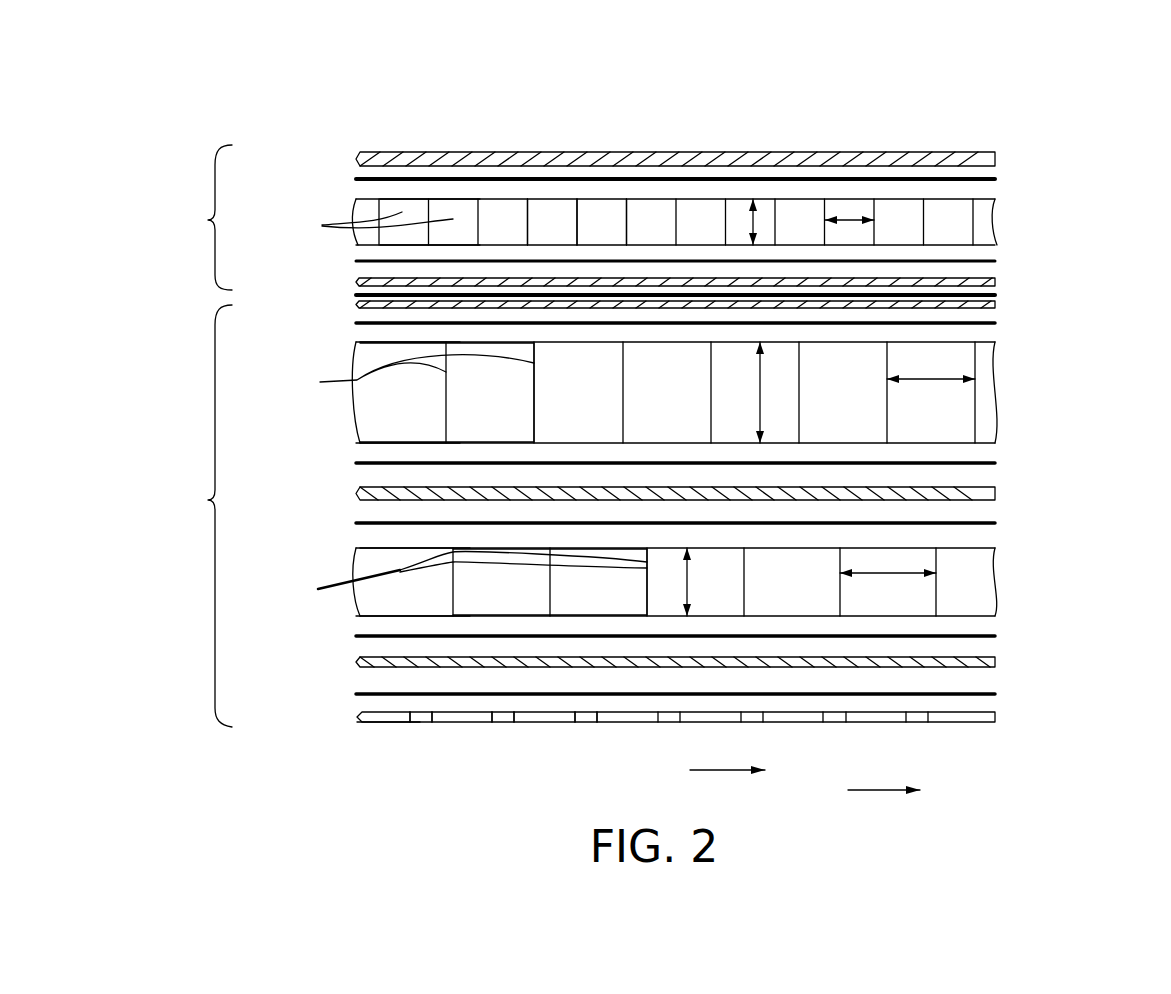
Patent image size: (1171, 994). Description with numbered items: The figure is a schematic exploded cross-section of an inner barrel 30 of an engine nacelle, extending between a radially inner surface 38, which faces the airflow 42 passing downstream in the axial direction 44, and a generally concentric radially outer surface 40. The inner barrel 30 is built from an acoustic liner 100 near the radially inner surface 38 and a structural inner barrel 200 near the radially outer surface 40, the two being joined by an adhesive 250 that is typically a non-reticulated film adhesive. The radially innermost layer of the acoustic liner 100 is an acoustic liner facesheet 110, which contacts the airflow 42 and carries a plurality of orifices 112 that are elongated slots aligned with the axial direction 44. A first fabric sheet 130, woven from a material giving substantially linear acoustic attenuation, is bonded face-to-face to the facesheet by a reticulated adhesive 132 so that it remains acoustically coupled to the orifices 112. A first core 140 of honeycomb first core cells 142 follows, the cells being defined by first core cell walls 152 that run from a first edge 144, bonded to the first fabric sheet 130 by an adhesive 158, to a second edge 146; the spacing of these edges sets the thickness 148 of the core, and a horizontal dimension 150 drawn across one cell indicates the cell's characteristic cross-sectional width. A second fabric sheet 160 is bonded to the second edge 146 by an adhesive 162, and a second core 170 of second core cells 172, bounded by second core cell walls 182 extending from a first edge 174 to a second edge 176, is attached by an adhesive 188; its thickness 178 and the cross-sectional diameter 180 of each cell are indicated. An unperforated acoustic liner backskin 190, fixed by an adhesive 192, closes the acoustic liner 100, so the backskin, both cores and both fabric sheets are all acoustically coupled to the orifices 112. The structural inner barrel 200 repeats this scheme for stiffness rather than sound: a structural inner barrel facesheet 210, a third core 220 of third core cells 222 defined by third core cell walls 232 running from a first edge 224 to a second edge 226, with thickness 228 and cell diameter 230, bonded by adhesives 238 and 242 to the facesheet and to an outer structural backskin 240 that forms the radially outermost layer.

The inner barrel 30 is at (1002, 103).
The radially inner surface 38 is at (378, 722).
The radially outer surface 40 is at (437, 152).
The airflow 42 is at (716, 770).
The axial direction 44 is at (865, 790).
The acoustic liner 100 is at (197, 516).
The acoustic liner facesheet 110 is at (995, 717).
The orifices 112 is at (587, 723).
The first fabric sheet 130 is at (995, 662).
The adhesive 132 is at (995, 694).
The first core 140 is at (1000, 582).
The first core cells 142 is at (480, 604).
The first edge 144 is at (460, 616).
The second edge 146 is at (463, 548).
The thickness 148 is at (689, 582).
The cell width 150 is at (887, 573).
The first core cell walls 152 is at (459, 577).
The adhesive 158 is at (995, 636).
The second fabric sheet 160 is at (995, 494).
The adhesive 162 is at (995, 523).
The second core 170 is at (1000, 395).
The second core cells 172 is at (383, 425).
The first edge 174 is at (456, 443).
The second edge 176 is at (370, 342).
The thickness 178 is at (762, 385).
The cross-sectional diameter 180 is at (929, 383).
The second core cell walls 182 is at (405, 375).
The adhesive 188 is at (995, 463).
The acoustic liner backskin 190 is at (995, 295).
The adhesive 192 is at (995, 323).
The structural inner barrel 200 is at (197, 217).
The structural inner barrel facesheet 210 is at (995, 282).
The third core 220 is at (997, 222).
The third core cells 222 is at (366, 225).
The first edge 224 is at (400, 245).
The second edge 226 is at (388, 199).
The thickness 228 is at (757, 215).
The cross-sectional diameter 230 is at (852, 218).
The third core cell walls 232 is at (628, 218).
The adhesive 238 is at (995, 261).
The outer structural backskin 240 is at (995, 162).
The adhesive 242 is at (995, 179).
The adhesive 250 is at (995, 304).